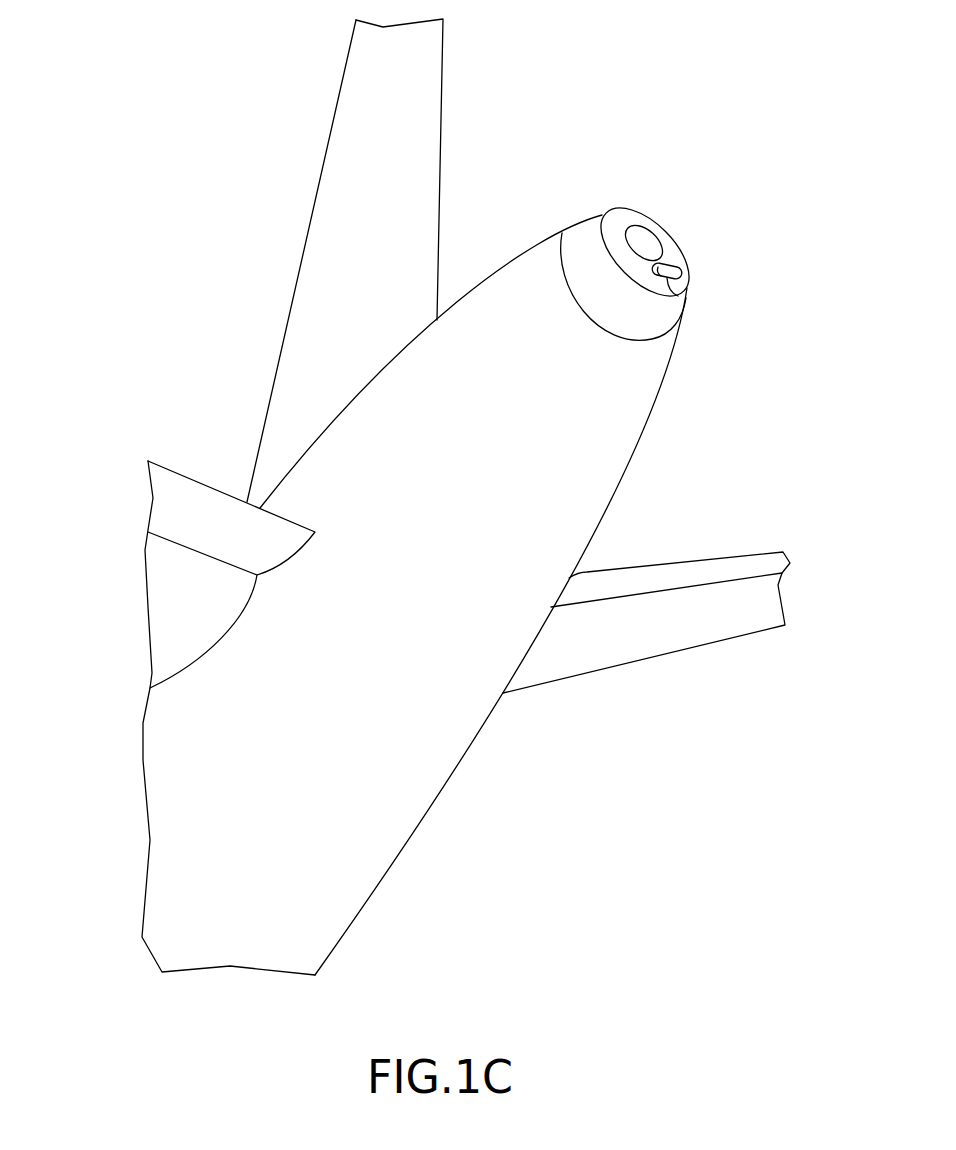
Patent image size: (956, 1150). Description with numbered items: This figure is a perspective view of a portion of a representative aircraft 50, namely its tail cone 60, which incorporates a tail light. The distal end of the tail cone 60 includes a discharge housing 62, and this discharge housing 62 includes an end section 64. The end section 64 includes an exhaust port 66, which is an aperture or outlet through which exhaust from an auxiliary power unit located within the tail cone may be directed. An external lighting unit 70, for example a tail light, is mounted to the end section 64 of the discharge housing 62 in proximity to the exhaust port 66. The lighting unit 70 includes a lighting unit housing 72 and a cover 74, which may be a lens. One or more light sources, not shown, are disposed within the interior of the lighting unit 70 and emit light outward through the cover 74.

The aircraft 50 is at (437, 497).
The tail cone 60 is at (541, 565).
The discharge housing 62 is at (691, 280).
The end section 64 is at (704, 253).
The exhaust port 66 is at (641, 226).
The external lighting unit 70 is at (736, 289).
The lighting unit housing 72 is at (673, 268).
The cover 74 is at (668, 284).